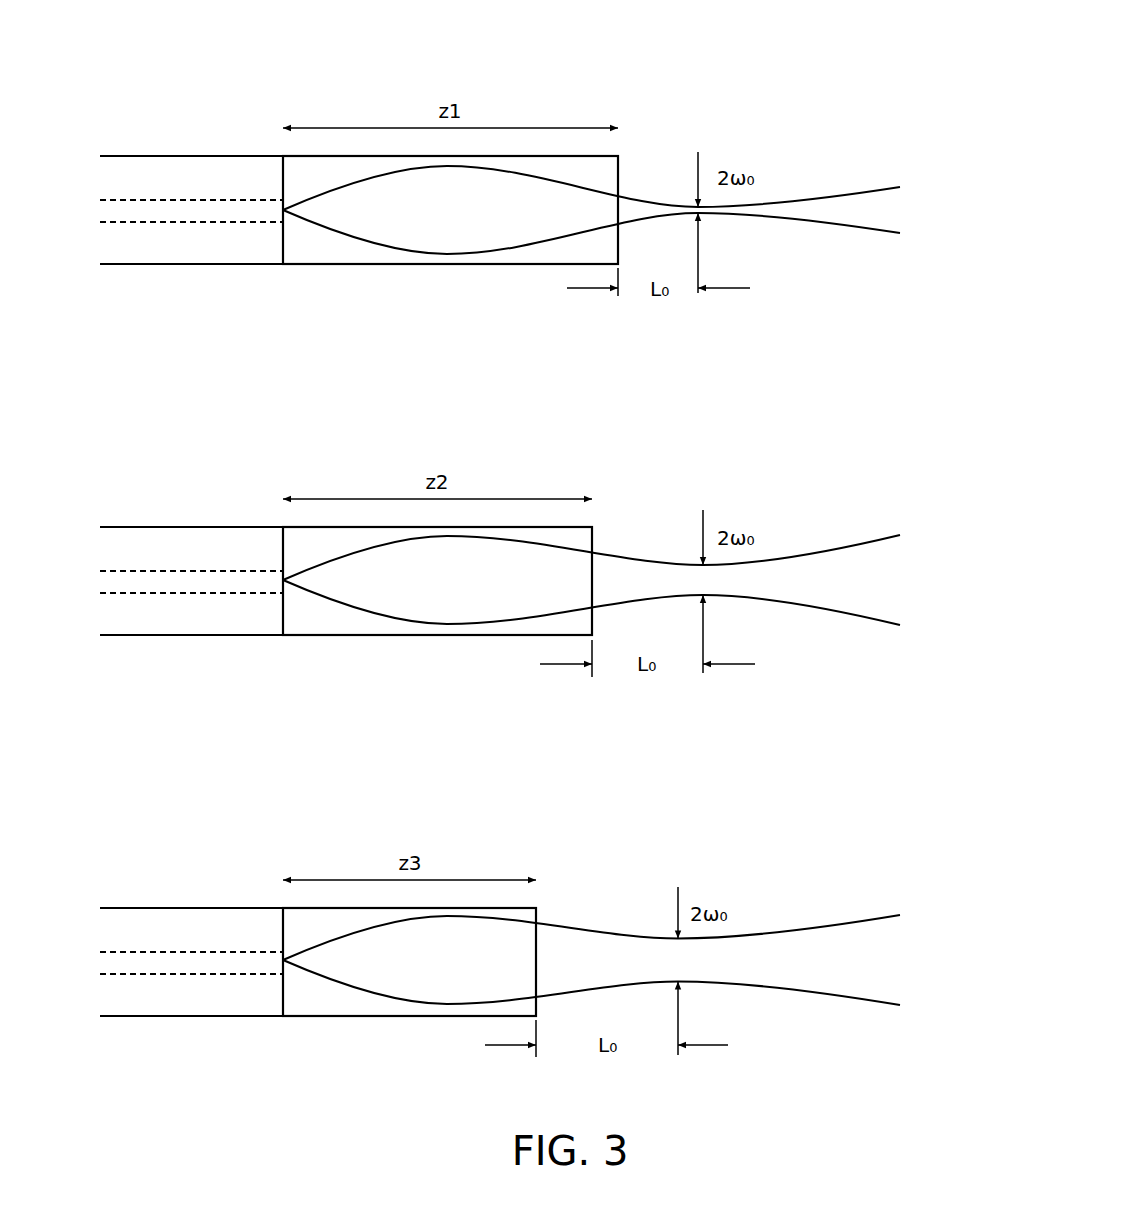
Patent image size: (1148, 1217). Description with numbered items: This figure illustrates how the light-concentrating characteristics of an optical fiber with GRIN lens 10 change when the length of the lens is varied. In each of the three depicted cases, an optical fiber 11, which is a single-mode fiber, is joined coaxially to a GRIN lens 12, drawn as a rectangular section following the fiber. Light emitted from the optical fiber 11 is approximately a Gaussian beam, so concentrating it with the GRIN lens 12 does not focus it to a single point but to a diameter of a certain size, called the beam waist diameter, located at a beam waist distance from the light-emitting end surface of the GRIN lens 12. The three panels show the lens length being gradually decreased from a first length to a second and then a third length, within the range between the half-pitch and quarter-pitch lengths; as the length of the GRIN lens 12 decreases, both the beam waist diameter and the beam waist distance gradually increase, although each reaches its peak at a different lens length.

The optical fiber with GRIN lens 10 is at (587, 78).
The optical fiber 11 is at (163, 156).
The GRIN lens 12 is at (363, 265).